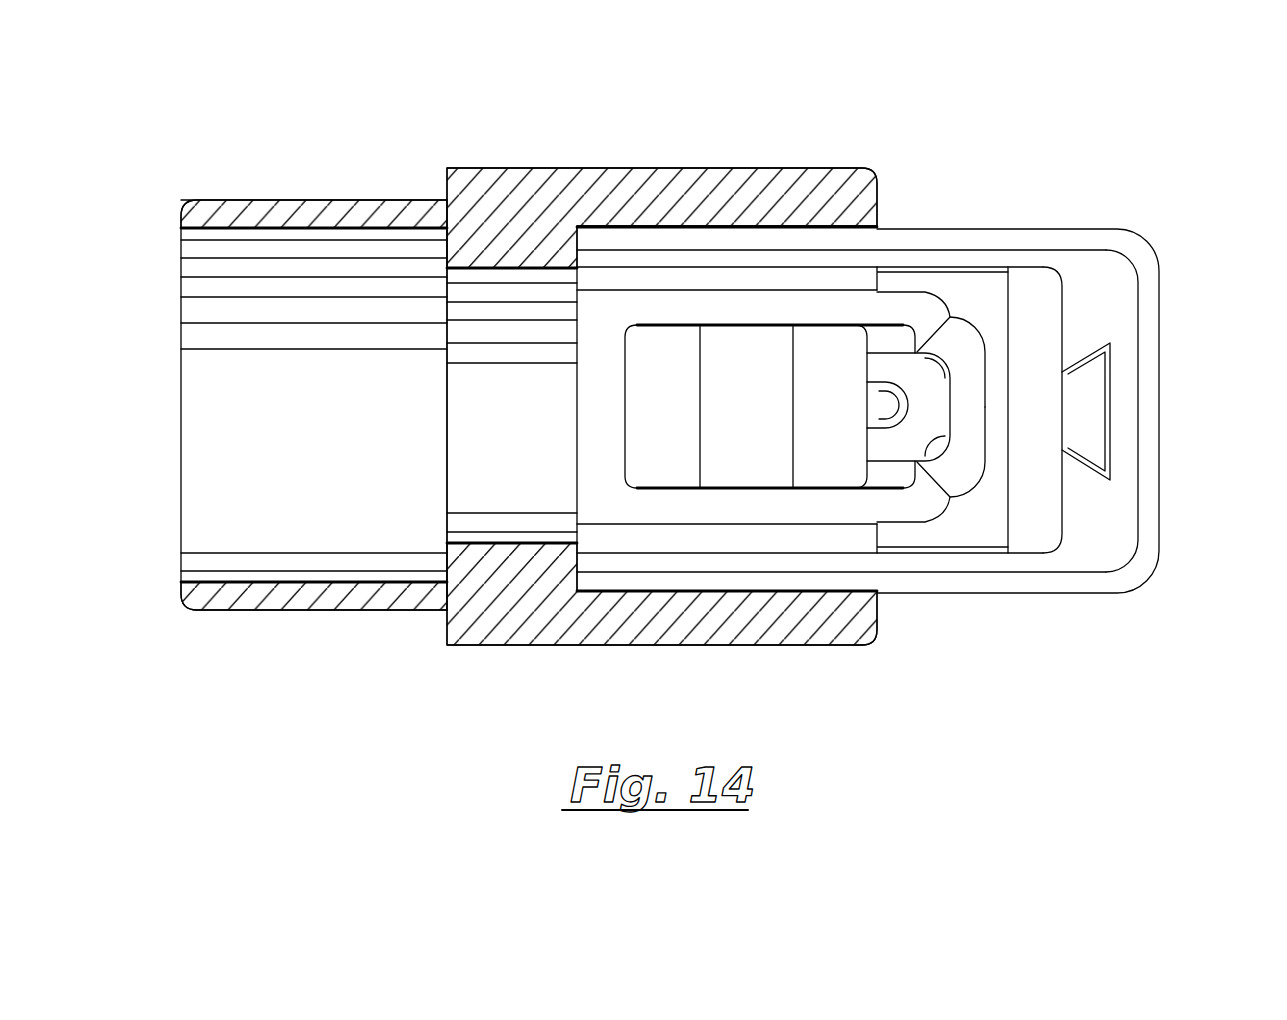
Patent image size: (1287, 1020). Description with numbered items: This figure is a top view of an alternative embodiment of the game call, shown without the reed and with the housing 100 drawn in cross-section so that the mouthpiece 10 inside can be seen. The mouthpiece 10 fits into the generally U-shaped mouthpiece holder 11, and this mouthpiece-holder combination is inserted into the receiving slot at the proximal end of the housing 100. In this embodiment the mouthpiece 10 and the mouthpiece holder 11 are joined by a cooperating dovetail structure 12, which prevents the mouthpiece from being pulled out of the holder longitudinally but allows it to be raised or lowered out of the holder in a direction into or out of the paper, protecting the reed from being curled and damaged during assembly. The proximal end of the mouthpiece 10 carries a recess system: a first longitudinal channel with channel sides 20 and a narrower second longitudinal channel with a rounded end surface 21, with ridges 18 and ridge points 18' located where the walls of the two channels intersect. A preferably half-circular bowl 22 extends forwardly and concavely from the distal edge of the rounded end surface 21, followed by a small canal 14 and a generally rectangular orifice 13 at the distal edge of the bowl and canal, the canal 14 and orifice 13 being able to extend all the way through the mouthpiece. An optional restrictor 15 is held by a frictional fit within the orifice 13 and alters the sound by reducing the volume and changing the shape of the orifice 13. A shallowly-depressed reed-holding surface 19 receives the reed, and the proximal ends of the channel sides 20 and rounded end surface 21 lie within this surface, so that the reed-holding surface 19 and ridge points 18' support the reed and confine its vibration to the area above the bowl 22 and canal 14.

The housing 100 is at (332, 175).
The channel sides 20 is at (660, 308).
The restrictor 15 is at (743, 367).
The orifice 13 is at (834, 352).
The ridge points 18' is at (923, 251).
The ridges 18 is at (942, 579).
The mouthpiece holder 11 is at (1158, 210).
The rounded end surface 21 is at (968, 380).
The dovetail structure 12 is at (1075, 412).
The reed-holding surface 19 is at (1002, 428).
The bowl 22 is at (925, 432).
The canal 14 is at (891, 440).
The mouthpiece 10 is at (998, 556).